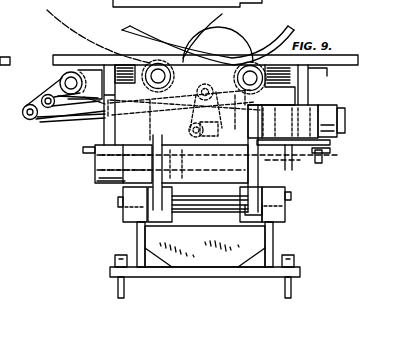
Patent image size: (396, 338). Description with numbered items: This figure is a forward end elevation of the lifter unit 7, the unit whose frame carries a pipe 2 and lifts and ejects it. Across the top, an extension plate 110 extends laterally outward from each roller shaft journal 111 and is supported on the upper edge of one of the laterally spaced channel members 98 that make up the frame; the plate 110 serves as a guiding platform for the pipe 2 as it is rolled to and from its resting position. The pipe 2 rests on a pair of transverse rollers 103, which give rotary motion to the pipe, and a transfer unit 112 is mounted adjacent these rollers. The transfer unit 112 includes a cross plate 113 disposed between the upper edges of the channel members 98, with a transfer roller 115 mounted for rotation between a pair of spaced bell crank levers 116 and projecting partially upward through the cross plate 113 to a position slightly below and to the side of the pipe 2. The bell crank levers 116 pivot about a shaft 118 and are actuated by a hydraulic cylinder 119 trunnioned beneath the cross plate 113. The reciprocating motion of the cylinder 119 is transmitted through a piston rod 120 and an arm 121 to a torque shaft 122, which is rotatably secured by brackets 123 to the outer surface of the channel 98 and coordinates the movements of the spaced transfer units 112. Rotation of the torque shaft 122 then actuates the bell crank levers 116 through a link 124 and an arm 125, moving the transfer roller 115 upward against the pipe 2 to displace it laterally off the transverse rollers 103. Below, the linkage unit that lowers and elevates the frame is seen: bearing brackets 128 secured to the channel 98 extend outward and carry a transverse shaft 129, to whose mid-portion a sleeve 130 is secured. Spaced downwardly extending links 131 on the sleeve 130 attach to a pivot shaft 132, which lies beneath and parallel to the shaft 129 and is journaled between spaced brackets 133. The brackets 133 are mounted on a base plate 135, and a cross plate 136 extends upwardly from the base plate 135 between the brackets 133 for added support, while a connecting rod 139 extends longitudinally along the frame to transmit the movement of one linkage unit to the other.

The pipe 2 is at (58, 24).
The lifter unit 7 is at (332, 163).
The channel members 98 is at (106, 94).
The transverse rollers 103 is at (160, 63).
The extension plate 110 is at (102, 54).
The roller shaft journal 111 is at (192, 54).
The transfer unit 112 is at (70, 134).
The cross plate 113 is at (133, 72).
The transfer roller 115 is at (306, 101).
The bell crank levers 116 is at (216, 129).
The shaft 118 is at (205, 89).
The hydraulic cylinder 119 is at (180, 150).
The piston rod 120 is at (58, 122).
The arm 121 is at (36, 101).
The torque shaft 122 is at (69, 76).
The brackets 123 is at (93, 72).
The link 124 is at (96, 121).
The arm 125 is at (68, 82).
The bearing brackets 128 is at (95, 180).
The transverse shaft 129 is at (95, 163).
The sleeve 130 is at (213, 183).
The links 131 is at (165, 168).
The pivot shaft 132 is at (120, 205).
The brackets 133 is at (137, 237).
The base plate 135 is at (110, 270).
The cross plate 136 is at (260, 240).
The connecting rod 139 is at (337, 103).